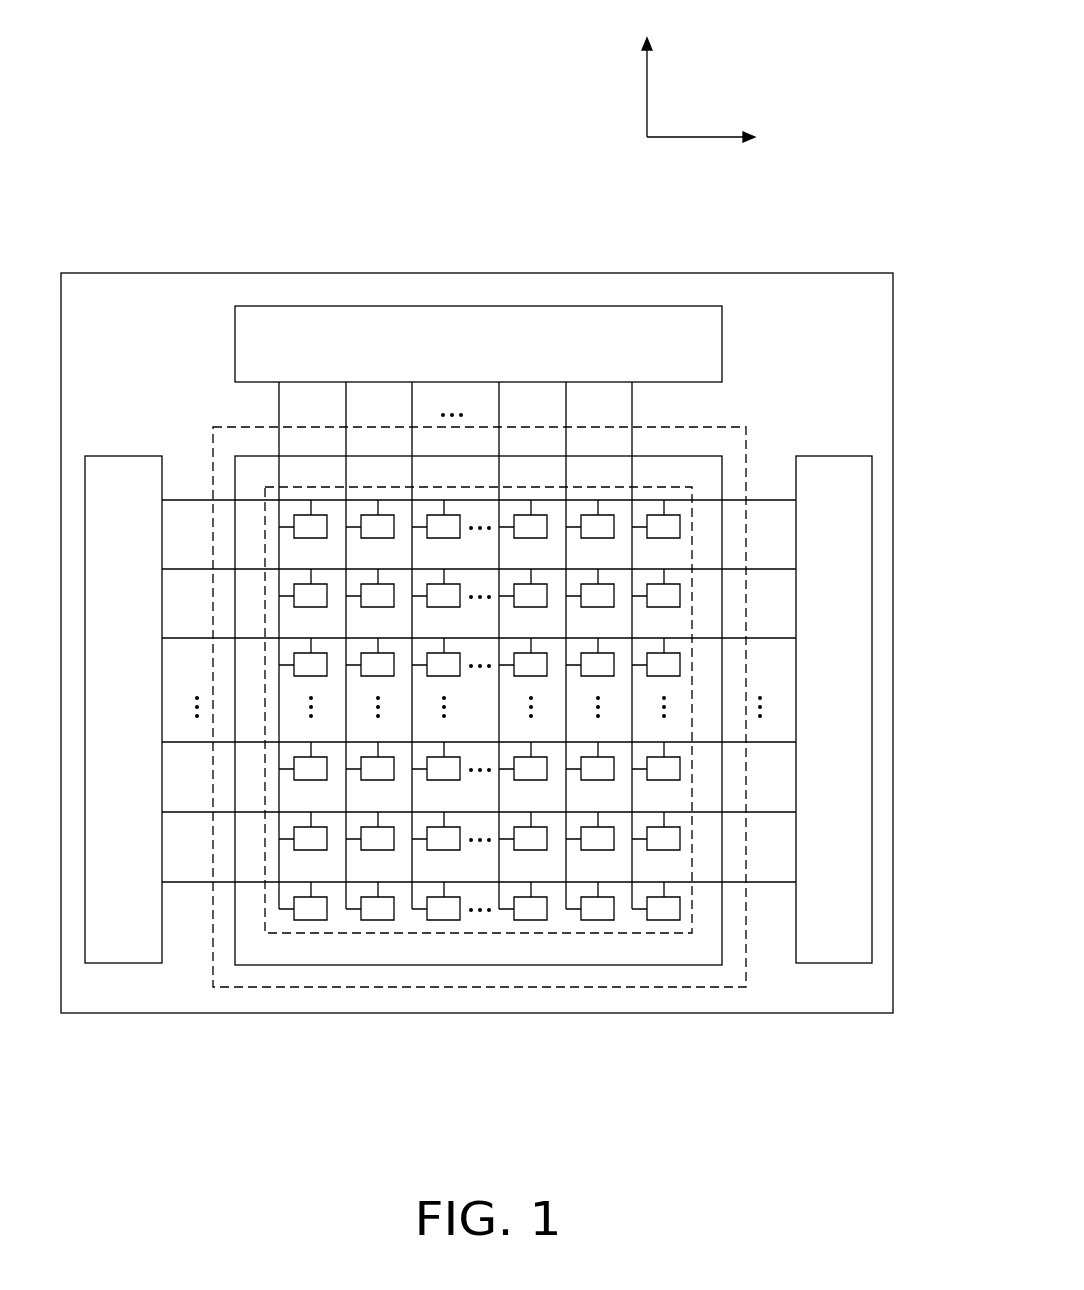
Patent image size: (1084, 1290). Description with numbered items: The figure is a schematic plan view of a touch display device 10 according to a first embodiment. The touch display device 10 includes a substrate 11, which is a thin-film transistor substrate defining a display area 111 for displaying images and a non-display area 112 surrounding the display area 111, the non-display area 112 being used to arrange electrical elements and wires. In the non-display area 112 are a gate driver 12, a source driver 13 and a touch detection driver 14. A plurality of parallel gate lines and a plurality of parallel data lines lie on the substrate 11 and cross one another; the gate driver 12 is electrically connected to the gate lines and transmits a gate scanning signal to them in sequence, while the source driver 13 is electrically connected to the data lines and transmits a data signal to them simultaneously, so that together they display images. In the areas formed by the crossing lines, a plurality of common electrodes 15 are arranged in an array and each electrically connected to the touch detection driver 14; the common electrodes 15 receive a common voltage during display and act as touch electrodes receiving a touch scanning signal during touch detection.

The touch display device 10 is at (315, 203).
The substrate 11 is at (941, 253).
The display area 111 is at (518, 646).
The non-display area 112 is at (845, 302).
The gate driver 12 is at (105, 455).
The source driver 13 is at (235, 343).
The touch detection driver 14 is at (813, 455).
The common electrodes 15 is at (310, 921).